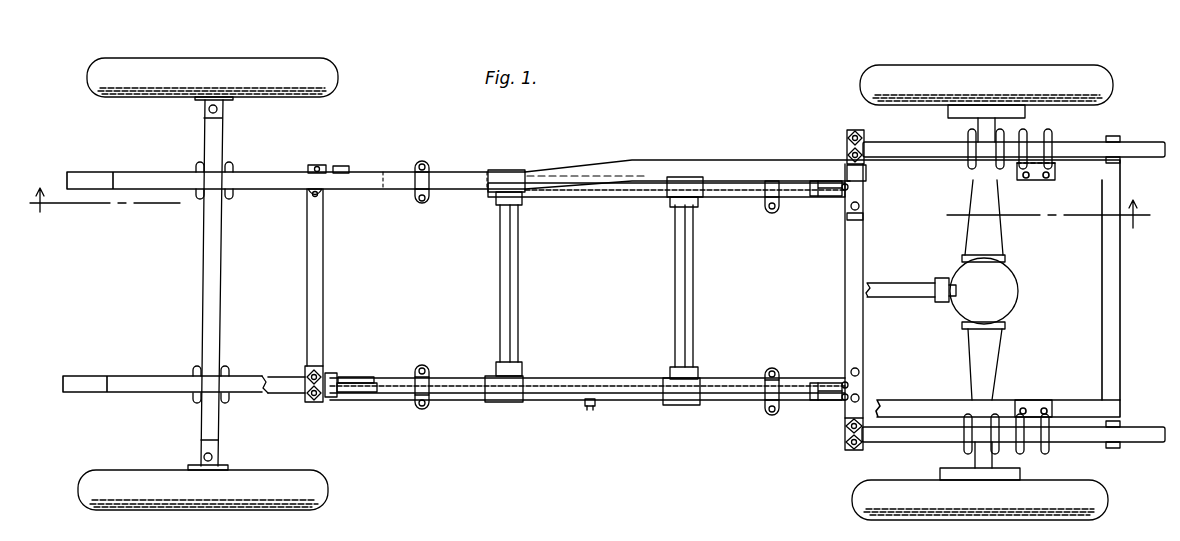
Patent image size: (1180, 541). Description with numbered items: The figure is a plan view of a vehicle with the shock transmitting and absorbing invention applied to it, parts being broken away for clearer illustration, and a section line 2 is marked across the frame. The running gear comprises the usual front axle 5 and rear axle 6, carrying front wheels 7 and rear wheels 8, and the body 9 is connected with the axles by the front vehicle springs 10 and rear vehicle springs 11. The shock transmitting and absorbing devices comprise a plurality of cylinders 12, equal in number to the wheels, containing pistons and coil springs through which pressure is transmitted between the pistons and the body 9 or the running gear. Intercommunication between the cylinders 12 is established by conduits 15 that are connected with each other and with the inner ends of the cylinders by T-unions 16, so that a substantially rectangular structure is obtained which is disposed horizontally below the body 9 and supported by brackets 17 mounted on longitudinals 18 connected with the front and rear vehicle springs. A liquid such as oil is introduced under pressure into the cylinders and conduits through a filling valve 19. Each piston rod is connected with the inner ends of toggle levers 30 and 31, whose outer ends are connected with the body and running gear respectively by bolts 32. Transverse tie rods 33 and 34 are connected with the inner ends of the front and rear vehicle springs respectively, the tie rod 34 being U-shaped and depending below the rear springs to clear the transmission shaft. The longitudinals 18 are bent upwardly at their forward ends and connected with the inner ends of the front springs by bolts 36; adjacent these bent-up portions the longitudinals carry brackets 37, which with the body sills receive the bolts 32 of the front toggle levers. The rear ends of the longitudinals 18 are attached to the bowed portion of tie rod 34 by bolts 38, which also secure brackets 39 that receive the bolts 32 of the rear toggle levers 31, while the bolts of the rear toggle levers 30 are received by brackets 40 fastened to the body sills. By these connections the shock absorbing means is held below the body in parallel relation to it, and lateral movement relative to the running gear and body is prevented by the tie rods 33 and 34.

The section line 2- 2 is at (583, 208).
The front axle 5 is at (218, 272).
The rear axle 6 is at (990, 243).
The front wheels 7 is at (293, 97).
The rear wheels 8 is at (862, 88).
The body 9 is at (136, 172).
The front vehicle springs 10 is at (284, 380).
The rear vehicle springs 11 is at (903, 143).
The cylinders 12 is at (745, 198).
The conduits 15 is at (566, 193).
The T-unions 16 is at (672, 192).
The brackets 17 is at (430, 168).
The longitudinals 18 is at (818, 200).
The filling valve 19 is at (586, 406).
The toggle lever 30 is at (843, 180).
The toggle lever 31 is at (345, 377).
The bolts 32 is at (348, 170).
The transverse tie rod 33 is at (312, 310).
The transverse tie rod 34 is at (848, 320).
The bolts 36 is at (316, 402).
The brackets 37 is at (332, 373).
The bolts 38 is at (860, 206).
The brackets 39 is at (857, 216).
The brackets 40 is at (866, 179).